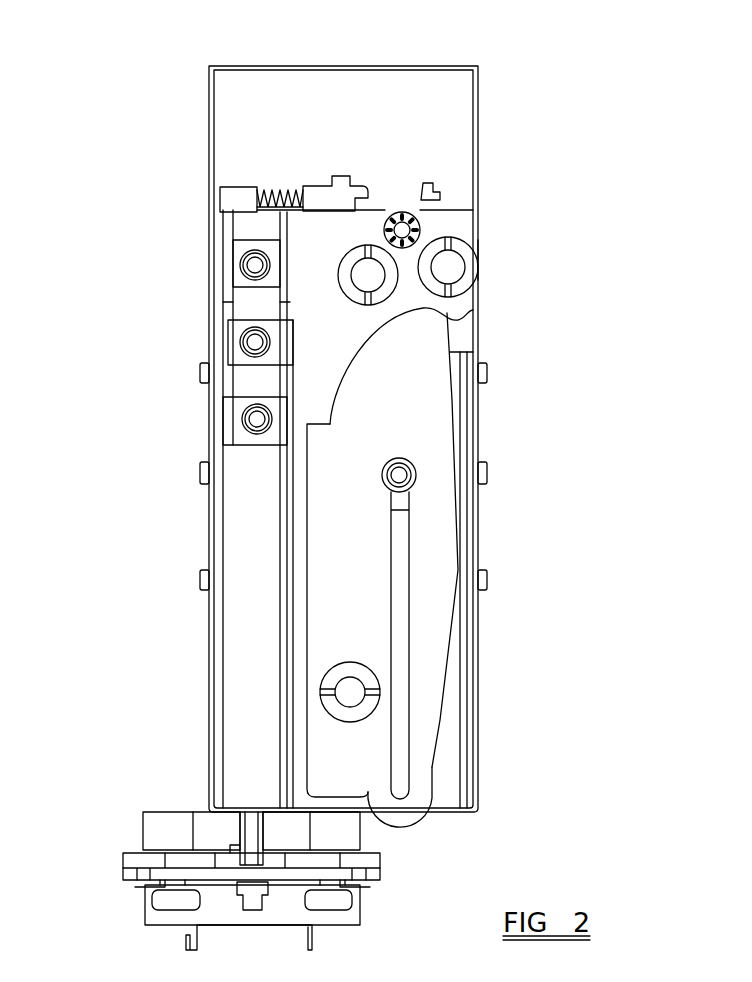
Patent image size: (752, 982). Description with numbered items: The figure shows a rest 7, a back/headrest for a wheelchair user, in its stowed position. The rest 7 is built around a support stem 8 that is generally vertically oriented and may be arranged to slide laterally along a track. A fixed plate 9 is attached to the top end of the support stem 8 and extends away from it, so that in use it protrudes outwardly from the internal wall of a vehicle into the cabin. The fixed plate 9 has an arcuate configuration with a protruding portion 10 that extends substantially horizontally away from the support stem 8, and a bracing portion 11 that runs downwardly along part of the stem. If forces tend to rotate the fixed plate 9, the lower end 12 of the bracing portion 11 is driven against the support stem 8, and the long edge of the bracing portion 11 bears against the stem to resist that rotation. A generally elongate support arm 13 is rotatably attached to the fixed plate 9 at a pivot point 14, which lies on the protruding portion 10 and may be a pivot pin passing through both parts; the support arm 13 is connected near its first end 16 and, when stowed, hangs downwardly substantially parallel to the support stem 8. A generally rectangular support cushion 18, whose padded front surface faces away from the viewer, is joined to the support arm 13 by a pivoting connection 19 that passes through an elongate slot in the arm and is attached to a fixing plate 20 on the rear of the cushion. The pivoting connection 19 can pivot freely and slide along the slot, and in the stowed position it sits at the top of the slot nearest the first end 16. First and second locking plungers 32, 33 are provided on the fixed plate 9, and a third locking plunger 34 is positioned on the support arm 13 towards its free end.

The rest 7 is at (618, 229).
The support stem 8 is at (248, 518).
The fixed plate 9 is at (332, 327).
The protruding portion 10 is at (473, 205).
The bracing portion 11 is at (313, 386).
The lower end 12 is at (308, 414).
The support arm 13 is at (345, 620).
The pivot point 14 is at (402, 212).
The first end 16 is at (496, 258).
The support cushion 18 is at (262, 118).
The pivoting connection 19 is at (417, 480).
The fixing plate 20 is at (483, 527).
The first locking plunger 32 is at (347, 262).
The second locking plunger 33 is at (455, 247).
The third locking plunger 34 is at (327, 703).